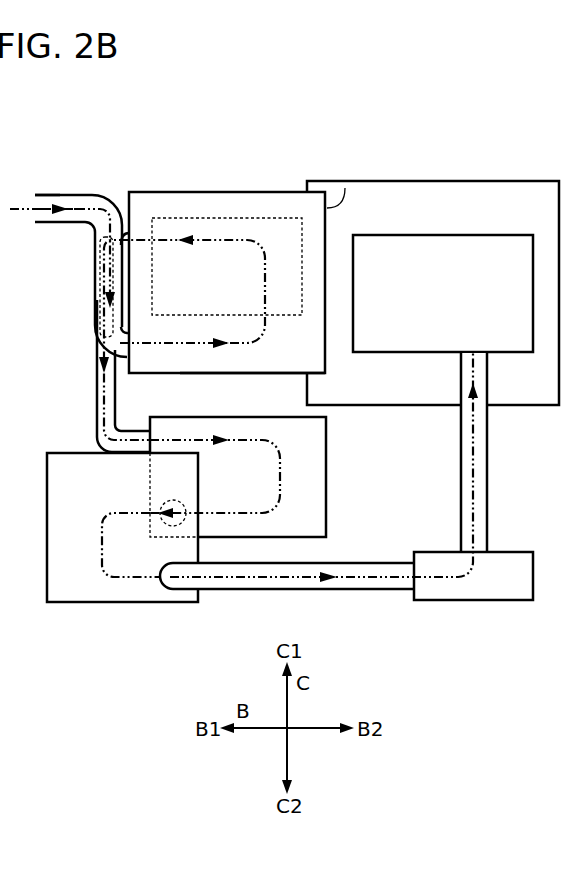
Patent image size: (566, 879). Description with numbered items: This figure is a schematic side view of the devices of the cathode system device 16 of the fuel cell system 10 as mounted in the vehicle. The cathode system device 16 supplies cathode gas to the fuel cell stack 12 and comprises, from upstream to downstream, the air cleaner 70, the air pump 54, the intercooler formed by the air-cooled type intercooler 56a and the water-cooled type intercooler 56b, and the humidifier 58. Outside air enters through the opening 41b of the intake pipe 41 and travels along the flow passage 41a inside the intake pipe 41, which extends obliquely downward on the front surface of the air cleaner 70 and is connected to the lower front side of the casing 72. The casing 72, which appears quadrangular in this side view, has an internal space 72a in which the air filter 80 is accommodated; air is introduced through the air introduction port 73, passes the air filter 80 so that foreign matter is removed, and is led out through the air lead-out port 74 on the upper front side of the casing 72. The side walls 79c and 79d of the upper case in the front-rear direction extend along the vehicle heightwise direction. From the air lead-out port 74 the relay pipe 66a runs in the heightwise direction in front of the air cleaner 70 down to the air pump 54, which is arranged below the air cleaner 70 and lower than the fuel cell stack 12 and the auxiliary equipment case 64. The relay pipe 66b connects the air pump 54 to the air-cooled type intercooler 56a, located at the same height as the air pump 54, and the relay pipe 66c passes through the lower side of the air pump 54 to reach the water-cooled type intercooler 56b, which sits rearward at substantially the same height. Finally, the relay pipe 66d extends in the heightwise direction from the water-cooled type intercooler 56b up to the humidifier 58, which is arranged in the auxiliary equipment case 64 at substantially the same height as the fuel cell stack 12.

The fuel cell system 10 is at (238, 80).
The fuel cell stack 12 is at (402, 160).
The cathode system device 16 is at (185, 160).
The intake pipe 41 is at (64, 195).
The flow passage 41a is at (72, 214).
The opening 41b is at (38, 195).
The air pump 54 is at (327, 463).
The air-cooled type intercooler 56a is at (68, 603).
The water-cooled type intercooler 56b is at (456, 601).
The humidifier 58 is at (498, 235).
The auxiliary equipment case 64 is at (440, 181).
The relay pipe 66a is at (97, 391).
The relay pipe 66b is at (180, 526).
The relay pipe 66c is at (349, 590).
The relay pipe 66d is at (488, 460).
The air cleaner 70 is at (255, 180).
The casing 72 is at (255, 375).
The internal space 72a is at (210, 393).
The air introduction port 73 is at (128, 348).
The air lead-out port 74 is at (118, 238).
The side wall 79c is at (128, 199).
The side wall 79d is at (345, 188).
The air filter 80 is at (227, 206).